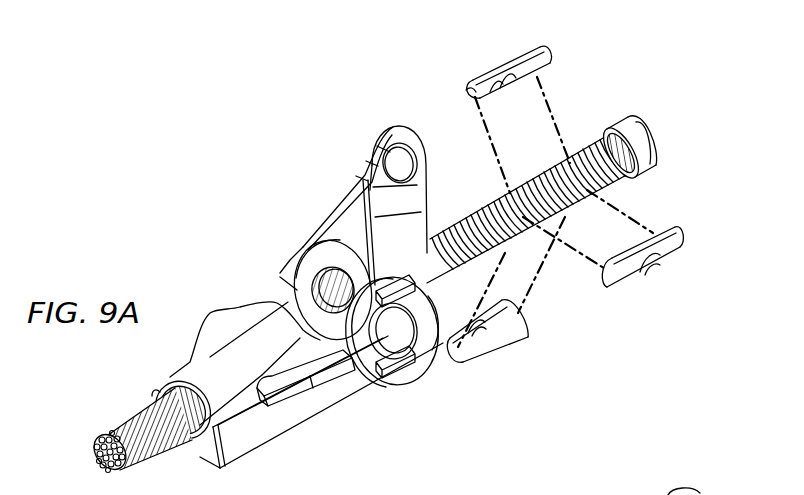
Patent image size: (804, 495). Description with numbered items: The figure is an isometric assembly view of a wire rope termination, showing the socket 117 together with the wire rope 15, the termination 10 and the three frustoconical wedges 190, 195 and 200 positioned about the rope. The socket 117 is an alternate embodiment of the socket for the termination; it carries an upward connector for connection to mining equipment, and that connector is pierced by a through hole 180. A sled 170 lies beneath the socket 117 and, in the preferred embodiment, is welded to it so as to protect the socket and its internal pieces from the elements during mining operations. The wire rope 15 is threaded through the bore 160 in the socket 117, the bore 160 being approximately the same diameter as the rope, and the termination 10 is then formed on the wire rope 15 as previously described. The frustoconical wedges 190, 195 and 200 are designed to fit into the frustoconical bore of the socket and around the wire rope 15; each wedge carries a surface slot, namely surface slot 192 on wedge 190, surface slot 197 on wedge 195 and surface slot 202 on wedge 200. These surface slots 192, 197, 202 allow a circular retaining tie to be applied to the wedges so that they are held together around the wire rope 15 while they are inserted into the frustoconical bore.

The termination 10 is at (638, 128).
The wire rope 15 is at (150, 457).
The socket 117 is at (210, 300).
The bore 160 is at (162, 390).
The sled 170 is at (260, 433).
The through hole 180 is at (412, 160).
The frustoconical wedge 190 is at (532, 50).
The surface slot 192 is at (500, 64).
The frustoconical wedge 195 is at (683, 240).
The surface slot 197 is at (657, 268).
The frustoconical wedge 200 is at (512, 324).
The surface slot 202 is at (497, 350).